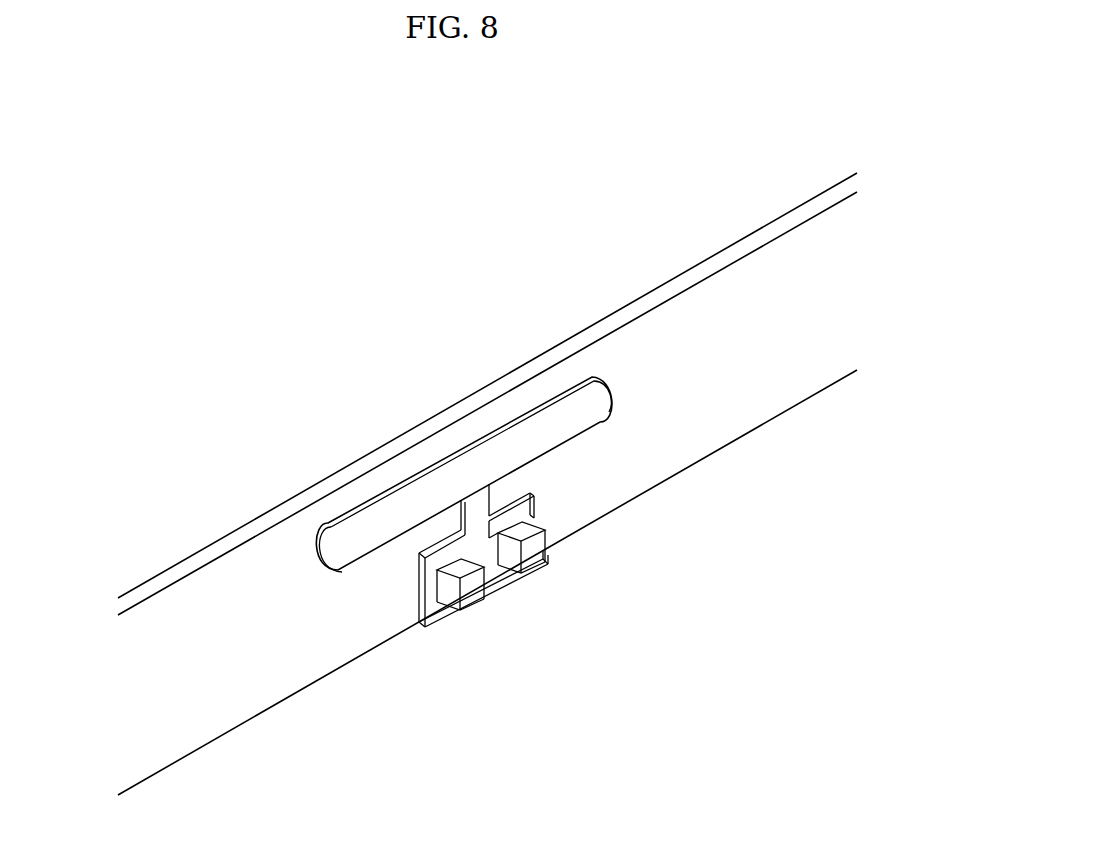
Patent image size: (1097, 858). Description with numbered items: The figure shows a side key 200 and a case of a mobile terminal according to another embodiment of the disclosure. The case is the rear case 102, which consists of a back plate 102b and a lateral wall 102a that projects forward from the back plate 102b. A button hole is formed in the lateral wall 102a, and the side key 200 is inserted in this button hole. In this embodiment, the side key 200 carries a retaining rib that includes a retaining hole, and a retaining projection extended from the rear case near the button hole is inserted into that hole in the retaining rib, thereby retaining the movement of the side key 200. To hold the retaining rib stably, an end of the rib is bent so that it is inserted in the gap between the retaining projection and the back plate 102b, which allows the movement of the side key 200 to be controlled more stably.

The rear case 102 is at (487, 427).
The lateral wall 102a is at (665, 347).
The back plate 102b is at (802, 440).
The side key 200 is at (548, 464).